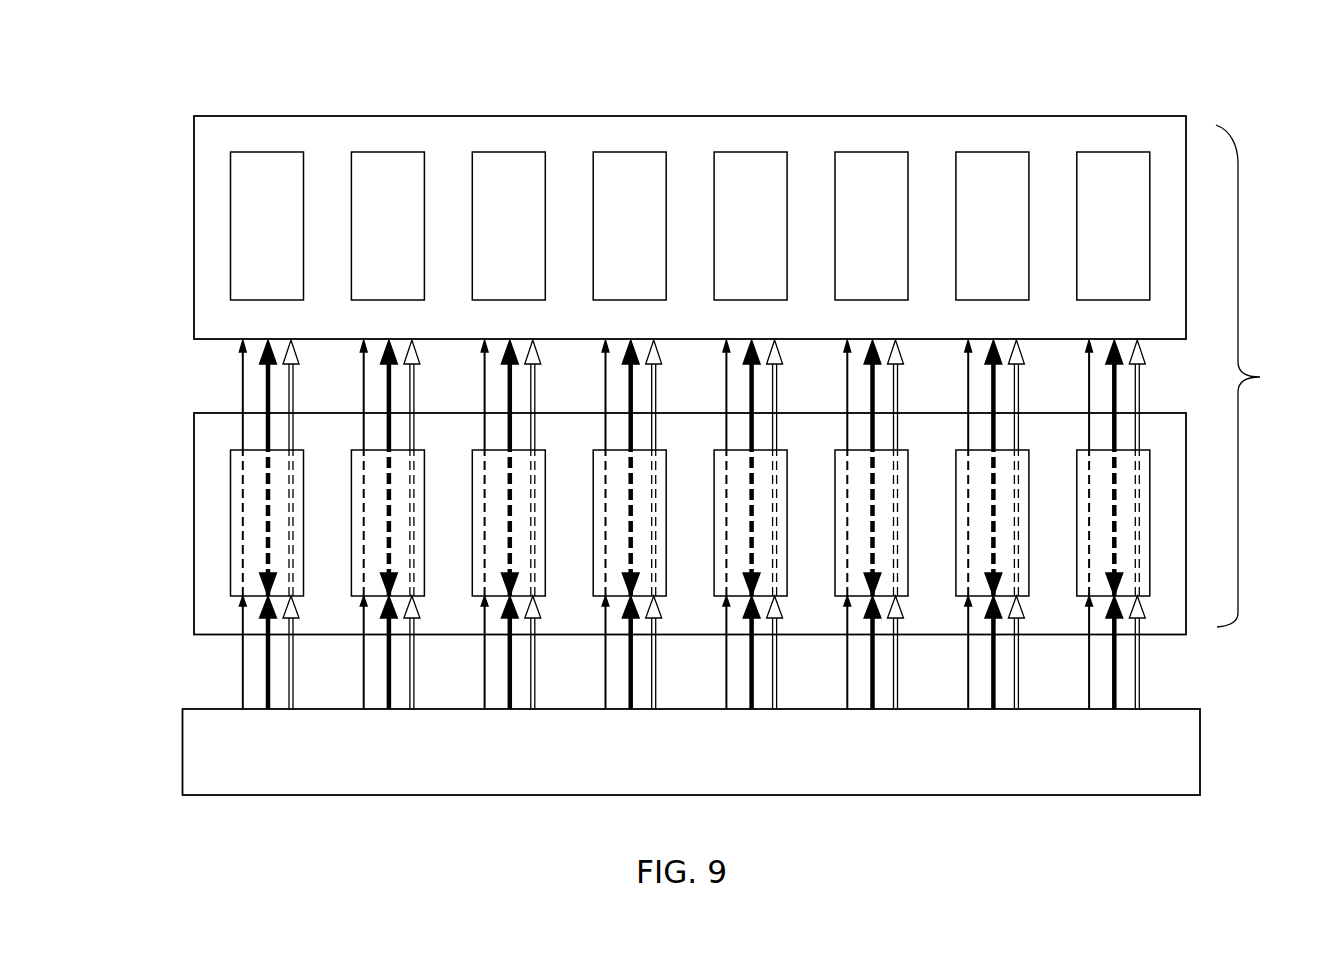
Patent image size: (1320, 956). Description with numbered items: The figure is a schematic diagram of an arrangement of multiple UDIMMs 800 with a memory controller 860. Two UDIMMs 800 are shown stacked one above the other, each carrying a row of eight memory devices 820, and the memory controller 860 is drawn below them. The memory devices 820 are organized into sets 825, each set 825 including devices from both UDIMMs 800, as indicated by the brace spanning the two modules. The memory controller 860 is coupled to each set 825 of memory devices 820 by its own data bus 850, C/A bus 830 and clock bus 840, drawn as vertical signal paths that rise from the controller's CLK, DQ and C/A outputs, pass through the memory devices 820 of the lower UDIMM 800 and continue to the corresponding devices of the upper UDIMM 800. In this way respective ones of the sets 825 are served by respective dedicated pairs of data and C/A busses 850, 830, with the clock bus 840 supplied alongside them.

The UDIMM 800 is at (1120, 87).
The memory device 820 is at (1112, 152).
The set of memory devices 825 is at (1256, 376).
The C/A bus 830 is at (1139, 690).
The clock bus 840 is at (1088, 683).
The data bus 850 is at (1117, 661).
The memory controller 860 is at (1200, 752).